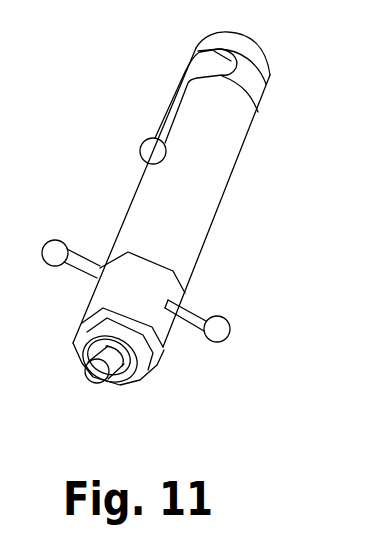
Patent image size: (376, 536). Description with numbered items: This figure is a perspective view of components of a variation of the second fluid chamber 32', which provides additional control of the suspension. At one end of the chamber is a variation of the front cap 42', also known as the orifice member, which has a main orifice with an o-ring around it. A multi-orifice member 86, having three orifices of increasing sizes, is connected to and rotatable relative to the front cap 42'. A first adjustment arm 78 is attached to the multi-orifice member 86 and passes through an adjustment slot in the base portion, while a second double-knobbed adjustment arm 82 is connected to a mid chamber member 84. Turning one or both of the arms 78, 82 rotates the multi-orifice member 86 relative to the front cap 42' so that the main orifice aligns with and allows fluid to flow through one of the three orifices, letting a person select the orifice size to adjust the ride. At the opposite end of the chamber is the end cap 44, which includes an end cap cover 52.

The second fluid chamber 32' is at (160, 197).
The front cap 42' is at (269, 50).
The multi-orifice member 86 is at (257, 87).
The first adjustment arm 78 is at (172, 97).
The second double-knobbed adjustment arm 82 is at (218, 335).
The mid chamber member 84 is at (107, 290).
The end cap 44 is at (143, 363).
The end cap cover 52 is at (98, 377).